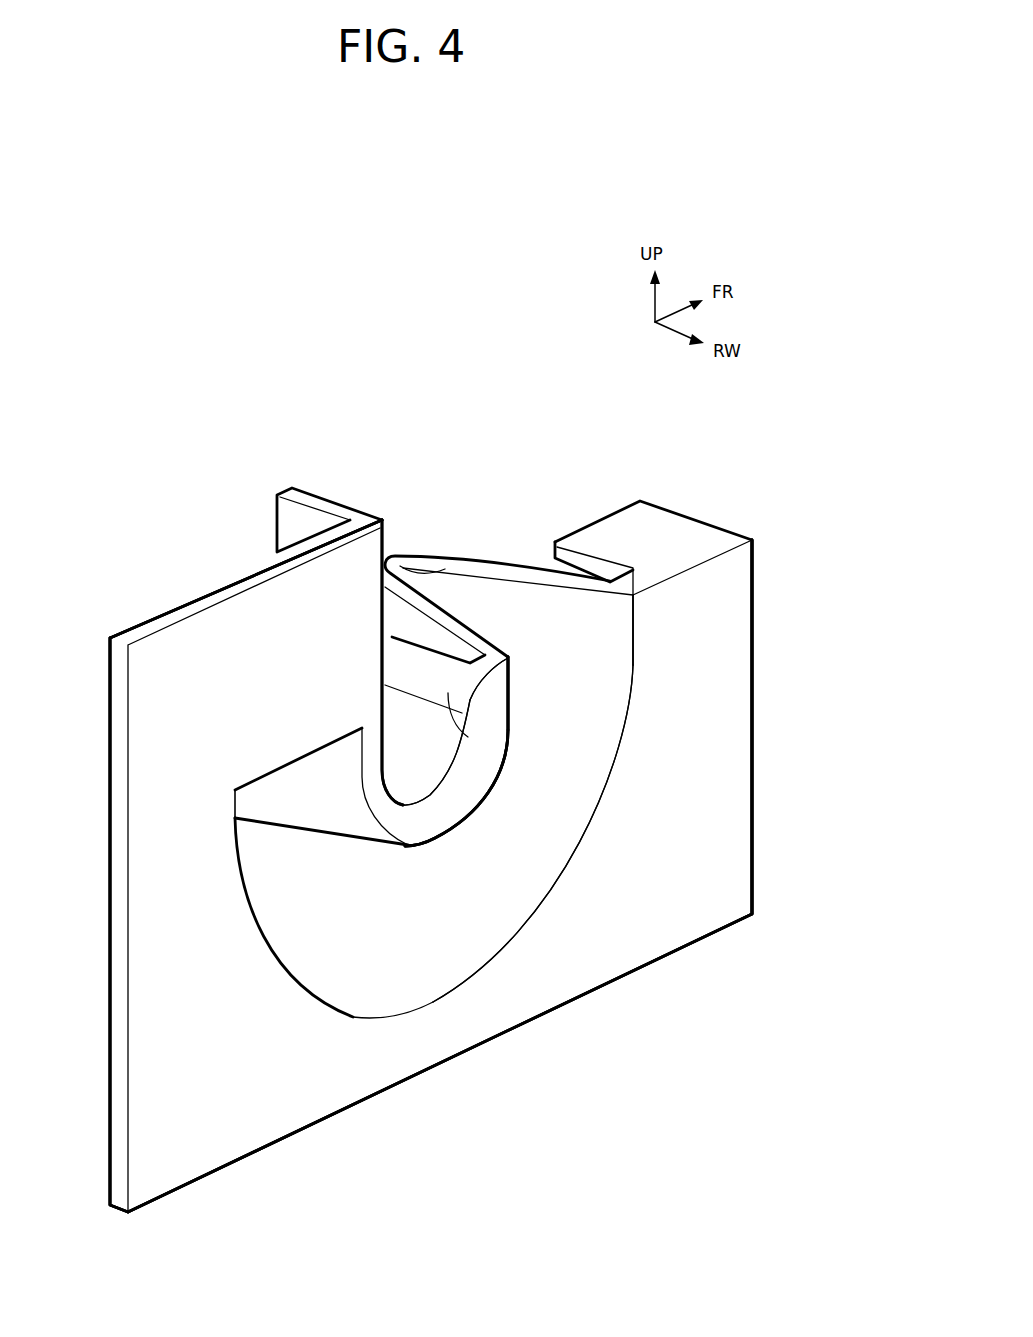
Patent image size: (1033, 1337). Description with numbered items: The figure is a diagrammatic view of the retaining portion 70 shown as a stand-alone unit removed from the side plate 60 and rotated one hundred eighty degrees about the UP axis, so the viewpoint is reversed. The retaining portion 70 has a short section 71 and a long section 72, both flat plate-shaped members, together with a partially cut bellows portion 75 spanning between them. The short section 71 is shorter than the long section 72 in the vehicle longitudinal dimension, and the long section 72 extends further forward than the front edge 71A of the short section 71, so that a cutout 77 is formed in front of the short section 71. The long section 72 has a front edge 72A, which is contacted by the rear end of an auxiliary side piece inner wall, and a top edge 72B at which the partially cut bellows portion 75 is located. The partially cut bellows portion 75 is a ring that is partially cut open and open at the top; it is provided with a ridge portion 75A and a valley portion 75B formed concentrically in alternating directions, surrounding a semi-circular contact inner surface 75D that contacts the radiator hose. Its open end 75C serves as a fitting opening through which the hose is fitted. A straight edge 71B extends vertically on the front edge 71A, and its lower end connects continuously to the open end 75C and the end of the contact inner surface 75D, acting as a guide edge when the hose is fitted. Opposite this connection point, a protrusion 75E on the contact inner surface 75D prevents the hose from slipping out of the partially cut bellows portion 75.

The side plate 60 is at (113, 428).
The retaining portion 70 is at (113, 428).
The short section 71 is at (177, 645).
The front edge of the short section 71A is at (383, 532).
The straight edge 71B is at (383, 720).
The long section 72 is at (698, 902).
The front edge of the long section 72A is at (753, 570).
The top edge of the long section 72B is at (707, 555).
The partially cut bellows portion 75 is at (372, 990).
The ridge portion 75A is at (437, 572).
The valley portion 75B is at (507, 675).
The open end 75C is at (422, 673).
The contact inner surface 75D is at (420, 788).
The protrusion 75E is at (468, 738).
The cutout 77 is at (515, 483).